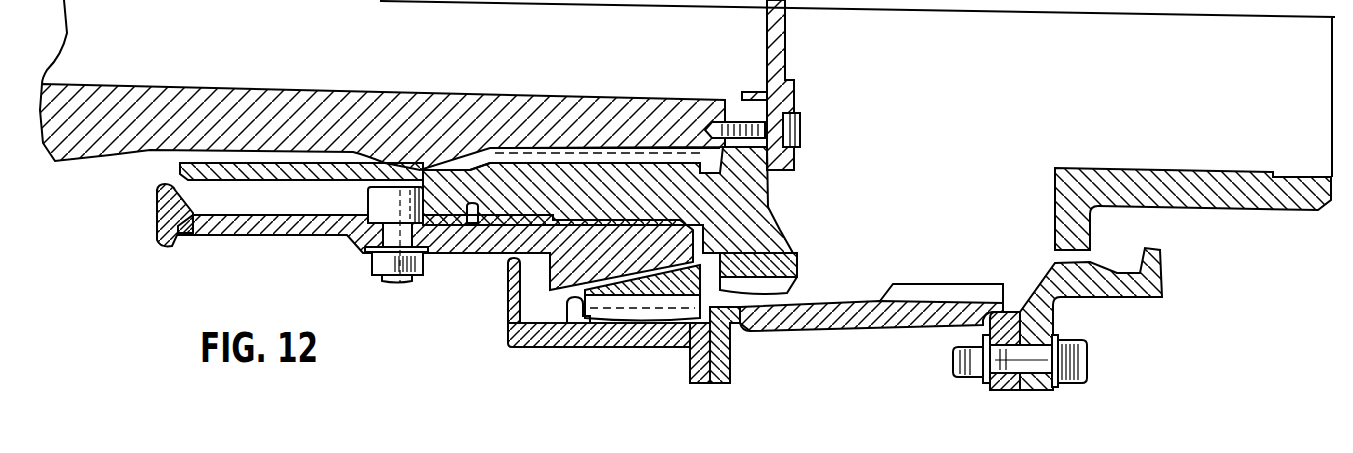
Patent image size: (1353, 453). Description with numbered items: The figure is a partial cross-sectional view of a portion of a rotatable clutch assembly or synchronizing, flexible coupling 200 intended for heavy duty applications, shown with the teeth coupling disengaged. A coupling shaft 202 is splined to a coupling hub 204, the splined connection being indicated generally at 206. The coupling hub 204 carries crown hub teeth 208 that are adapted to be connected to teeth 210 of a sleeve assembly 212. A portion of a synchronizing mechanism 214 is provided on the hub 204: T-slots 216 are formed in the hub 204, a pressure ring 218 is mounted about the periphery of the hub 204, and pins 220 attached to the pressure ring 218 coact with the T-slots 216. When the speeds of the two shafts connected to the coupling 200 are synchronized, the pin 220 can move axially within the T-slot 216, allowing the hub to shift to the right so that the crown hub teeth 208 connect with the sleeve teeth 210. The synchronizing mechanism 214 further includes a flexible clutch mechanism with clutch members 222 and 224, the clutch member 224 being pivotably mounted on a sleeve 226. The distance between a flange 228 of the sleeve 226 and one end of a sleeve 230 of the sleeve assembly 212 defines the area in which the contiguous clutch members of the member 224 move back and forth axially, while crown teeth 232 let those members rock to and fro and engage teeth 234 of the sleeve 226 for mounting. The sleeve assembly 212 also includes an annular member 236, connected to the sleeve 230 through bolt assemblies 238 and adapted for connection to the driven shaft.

The synchronizing, flexible coupling 200 is at (576, 332).
The coupling shaft 202 is at (505, 97).
The coupling hub 204 is at (772, 186).
The spline connection 206 is at (650, 160).
The hub teeth 208 is at (797, 277).
The sleeve teeth 210 is at (945, 286).
The sleeve assembly 212 is at (936, 319).
The synchronizing mechanism 214 is at (425, 226).
The T-slots 216 is at (240, 205).
The pressure ring 218 is at (238, 234).
The pins 220 is at (368, 196).
The clutch member 222 is at (513, 296).
The clutch member 224 is at (546, 294).
The sleeve 226 is at (666, 350).
The flange 228 is at (553, 324).
The sleeve 230 is at (826, 331).
The crown teeth 232 is at (633, 318).
The teeth 234 is at (748, 331).
The annular member 236 is at (1224, 207).
The bolt assemblies 238 is at (1093, 345).